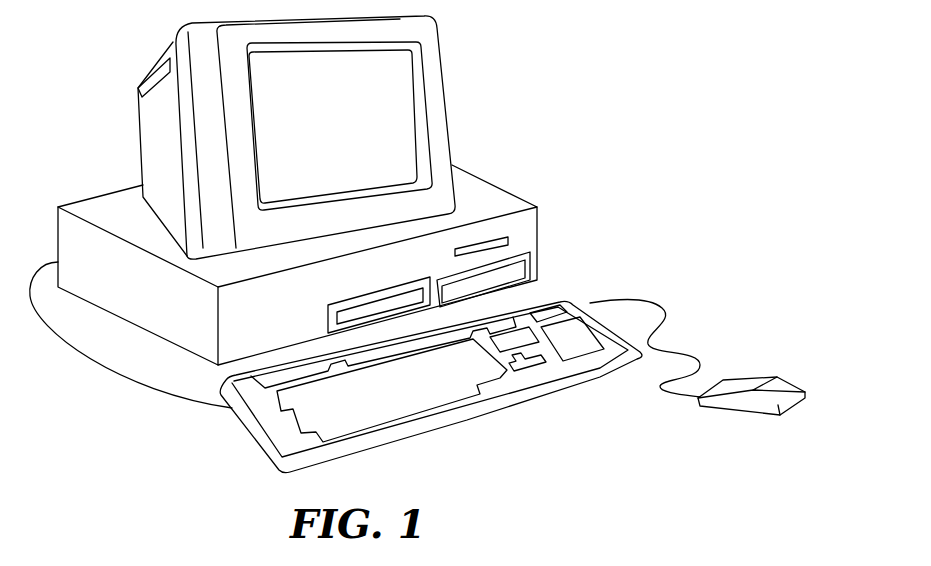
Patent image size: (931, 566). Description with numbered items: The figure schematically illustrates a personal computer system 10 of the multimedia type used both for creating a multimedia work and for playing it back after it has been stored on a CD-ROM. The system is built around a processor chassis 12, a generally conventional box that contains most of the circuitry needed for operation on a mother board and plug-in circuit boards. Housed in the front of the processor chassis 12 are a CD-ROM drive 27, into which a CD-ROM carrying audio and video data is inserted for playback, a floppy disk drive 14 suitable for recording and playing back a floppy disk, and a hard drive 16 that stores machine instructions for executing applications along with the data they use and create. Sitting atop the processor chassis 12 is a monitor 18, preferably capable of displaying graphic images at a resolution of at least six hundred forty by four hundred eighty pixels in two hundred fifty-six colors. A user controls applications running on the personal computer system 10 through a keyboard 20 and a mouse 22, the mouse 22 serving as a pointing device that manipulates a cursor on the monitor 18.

The personal computer system 10 is at (447, 445).
The processor chassis 12 is at (324, 285).
The floppy disk drive 14 is at (488, 241).
The hard drive 16 is at (507, 270).
The monitor 18 is at (445, 80).
The keyboard 20 is at (526, 397).
The mouse 22 is at (780, 415).
The CD-ROM drive 27 is at (328, 315).